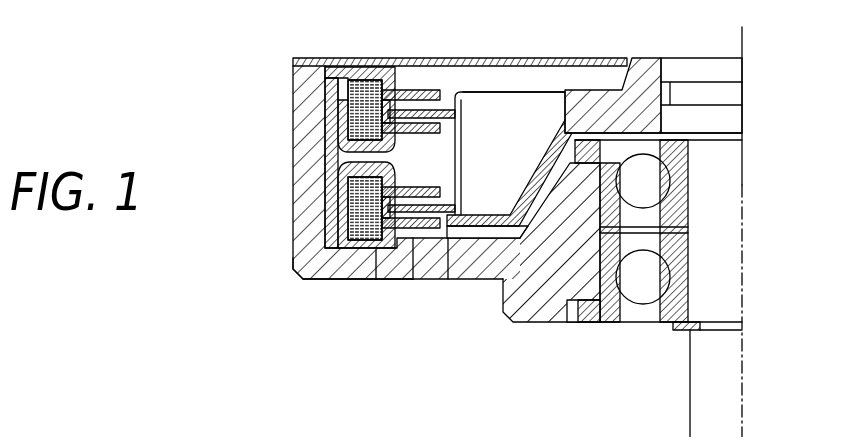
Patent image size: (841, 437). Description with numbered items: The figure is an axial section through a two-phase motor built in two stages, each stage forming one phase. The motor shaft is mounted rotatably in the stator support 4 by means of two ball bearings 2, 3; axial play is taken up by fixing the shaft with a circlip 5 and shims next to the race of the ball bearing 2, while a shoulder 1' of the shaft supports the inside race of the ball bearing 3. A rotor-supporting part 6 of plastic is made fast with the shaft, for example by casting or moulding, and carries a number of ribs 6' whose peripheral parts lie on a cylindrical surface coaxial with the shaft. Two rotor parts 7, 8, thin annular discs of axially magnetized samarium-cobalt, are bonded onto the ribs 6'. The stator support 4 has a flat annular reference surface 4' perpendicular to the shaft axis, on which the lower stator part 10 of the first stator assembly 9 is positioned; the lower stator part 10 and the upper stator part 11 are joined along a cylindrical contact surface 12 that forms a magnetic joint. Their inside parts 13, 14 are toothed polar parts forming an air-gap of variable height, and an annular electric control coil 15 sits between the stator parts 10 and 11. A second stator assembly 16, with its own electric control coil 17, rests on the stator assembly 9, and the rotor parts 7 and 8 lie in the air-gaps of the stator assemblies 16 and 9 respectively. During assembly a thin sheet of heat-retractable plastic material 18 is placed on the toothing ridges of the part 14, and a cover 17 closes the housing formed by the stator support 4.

The shoulder 1' is at (701, 218).
The ball bearing 2 is at (601, 325).
The ball bearing 3 is at (696, 193).
The stator support 4 is at (606, 233).
The annular reference surface 4' is at (375, 291).
The circlip 5 is at (675, 331).
The rotor-supporting part 6 is at (613, 67).
The ribs 6' is at (514, 62).
The rotor part 7 is at (462, 92).
The rotor part 8 is at (448, 279).
The first stator assembly 9 is at (313, 237).
The lower stator part 10 is at (357, 280).
The upper stator part 11 is at (300, 182).
The cylindrical contact surface 12 is at (300, 212).
The inside part 13 is at (442, 191).
The inside part 14 is at (413, 279).
The electric control coil 15 is at (300, 267).
The second stator assembly 16 is at (413, 77).
The electric control coil 17 is at (362, 66).
The sheet of heat-retractable plastic material 18 is at (412, 187).